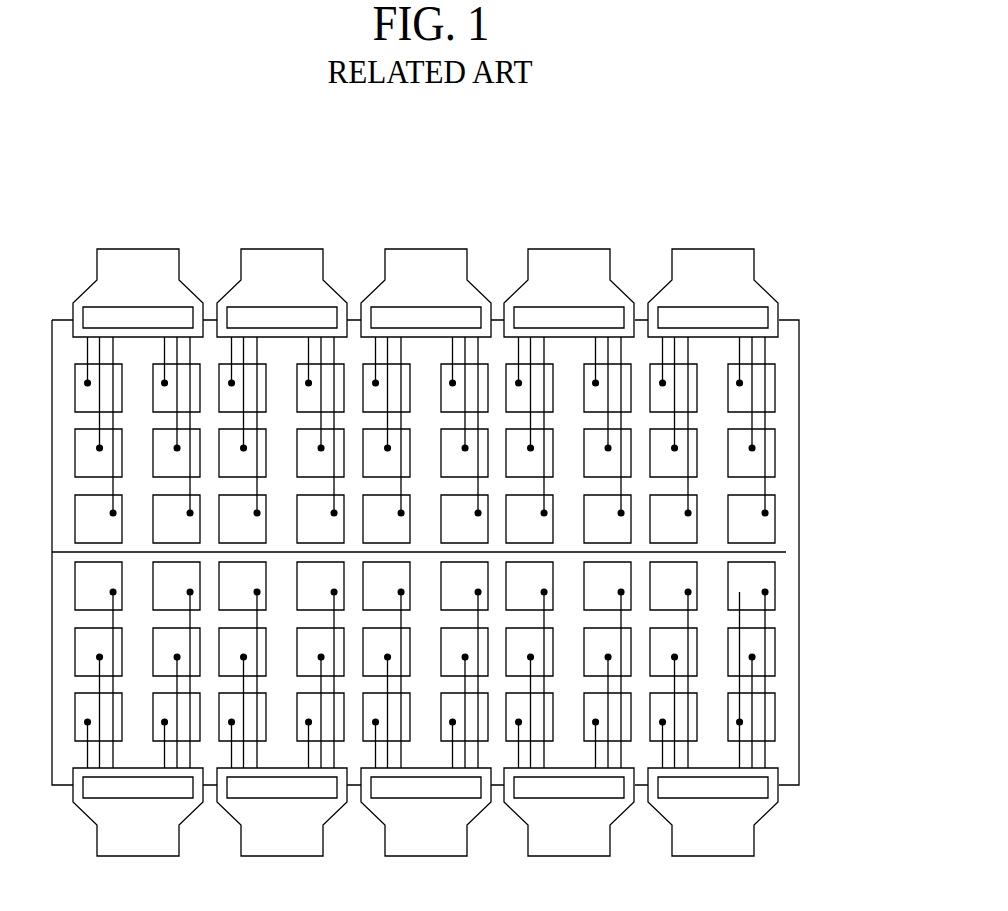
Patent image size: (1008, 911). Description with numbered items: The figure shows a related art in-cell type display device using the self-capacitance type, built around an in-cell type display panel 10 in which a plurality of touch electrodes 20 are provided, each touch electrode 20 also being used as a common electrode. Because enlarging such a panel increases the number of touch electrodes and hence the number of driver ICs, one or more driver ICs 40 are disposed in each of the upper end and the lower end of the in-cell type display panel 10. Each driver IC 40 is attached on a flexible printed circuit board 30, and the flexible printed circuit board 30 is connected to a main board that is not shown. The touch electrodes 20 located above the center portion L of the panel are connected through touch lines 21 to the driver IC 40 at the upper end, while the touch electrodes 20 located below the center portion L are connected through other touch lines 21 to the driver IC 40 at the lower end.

The in-cell type display panel 10 is at (799, 502).
The touch electrode 20 is at (835, 718).
The touch line 21 is at (835, 638).
The flexible printed circuit board 30 is at (742, 825).
The driver IC 40 is at (704, 793).
The center portion L is at (786, 552).